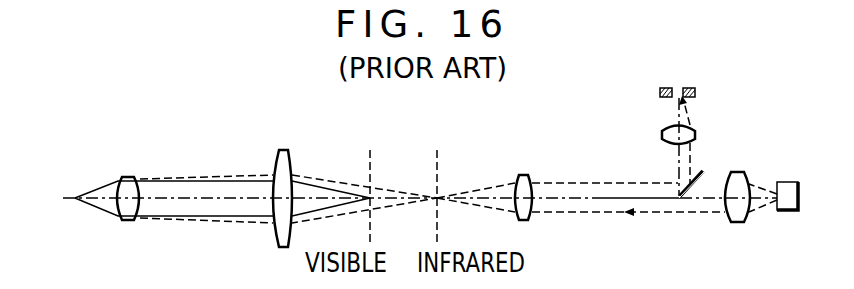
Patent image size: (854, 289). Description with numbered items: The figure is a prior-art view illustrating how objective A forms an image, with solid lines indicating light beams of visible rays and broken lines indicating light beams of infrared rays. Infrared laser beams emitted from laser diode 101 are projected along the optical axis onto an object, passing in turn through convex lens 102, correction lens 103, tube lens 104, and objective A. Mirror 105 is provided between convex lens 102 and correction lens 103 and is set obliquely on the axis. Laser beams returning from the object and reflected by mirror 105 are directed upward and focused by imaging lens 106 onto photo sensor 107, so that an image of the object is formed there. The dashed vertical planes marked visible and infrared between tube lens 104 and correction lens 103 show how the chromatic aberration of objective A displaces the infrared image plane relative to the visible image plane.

The objective A is at (128, 177).
The laser diode 101 is at (787, 210).
The convex lens 102 is at (736, 222).
The correction lens 103 is at (524, 175).
The tube lens 104 is at (283, 150).
The mirror 105 is at (702, 172).
The imaging lens 106 is at (666, 131).
The photo sensor 107 is at (680, 86).